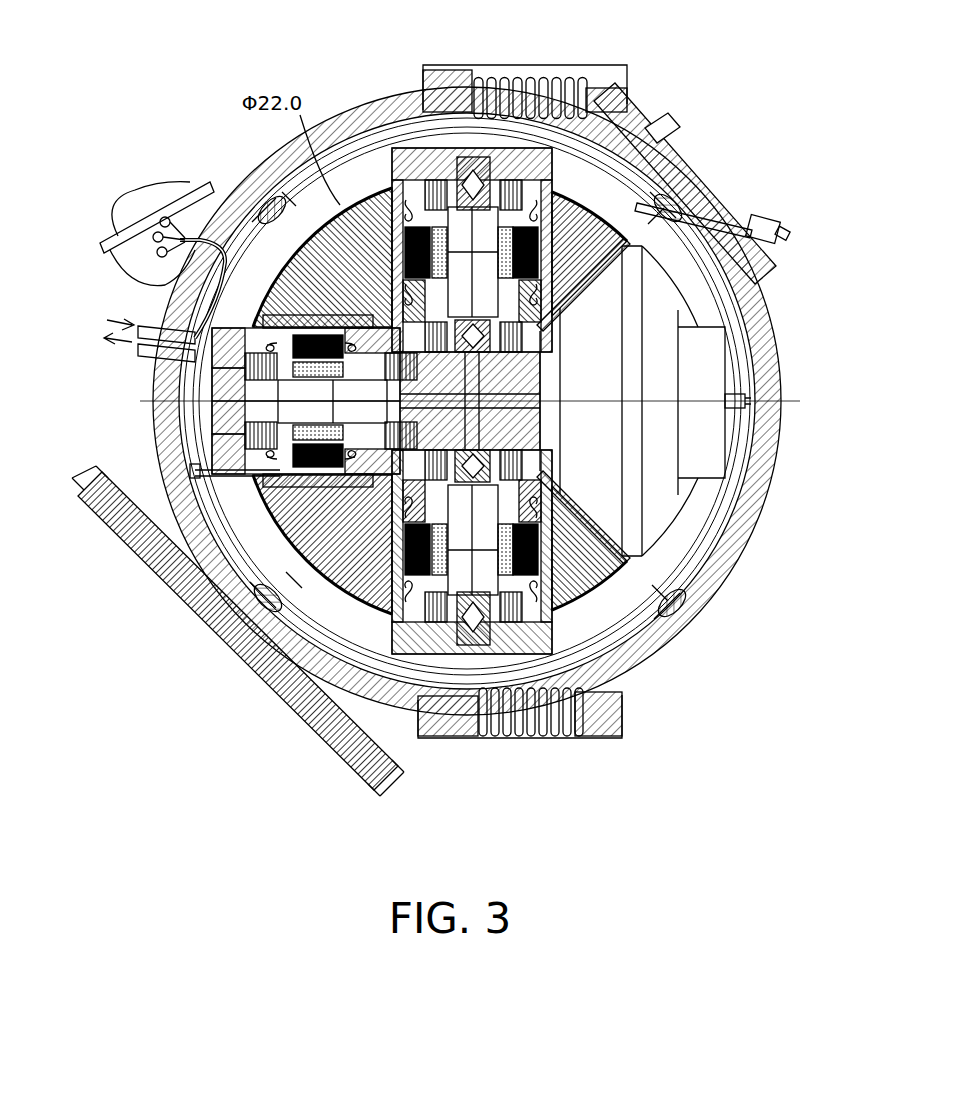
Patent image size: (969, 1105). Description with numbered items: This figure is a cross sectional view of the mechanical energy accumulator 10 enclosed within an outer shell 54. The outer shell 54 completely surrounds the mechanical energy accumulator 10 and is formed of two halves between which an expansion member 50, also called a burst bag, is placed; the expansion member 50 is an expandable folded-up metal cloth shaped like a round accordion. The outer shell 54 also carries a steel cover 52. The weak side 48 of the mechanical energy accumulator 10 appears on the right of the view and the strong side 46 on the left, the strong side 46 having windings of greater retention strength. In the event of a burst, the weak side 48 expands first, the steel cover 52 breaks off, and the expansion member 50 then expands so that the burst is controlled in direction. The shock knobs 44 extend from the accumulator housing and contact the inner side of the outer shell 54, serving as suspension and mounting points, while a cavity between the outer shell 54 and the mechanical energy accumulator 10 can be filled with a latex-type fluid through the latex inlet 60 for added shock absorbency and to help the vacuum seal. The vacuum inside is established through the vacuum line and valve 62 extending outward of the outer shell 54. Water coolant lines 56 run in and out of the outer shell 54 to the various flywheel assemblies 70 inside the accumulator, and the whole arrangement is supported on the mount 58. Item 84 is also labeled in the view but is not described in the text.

The mechanical energy accumulator 10 is at (582, 188).
The shock knobs 44 is at (256, 195).
The strong side 46 is at (263, 520).
The weak side 48 is at (720, 458).
The expansion member 50 is at (497, 78).
The steel cover 52 is at (630, 68).
The outer shell 54 is at (780, 350).
The water coolant lines 56 is at (80, 318).
The mount 58 is at (270, 685).
The latex inlet 60 is at (656, 125).
The vacuum line and valve 62 is at (770, 225).
The flywheel assemblies 70 is at (215, 393).
The ring liner 84 is at (780, 378).